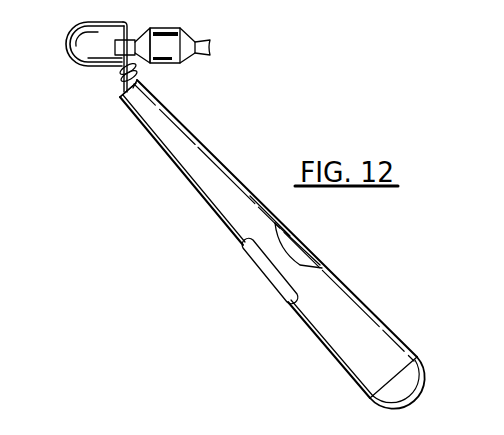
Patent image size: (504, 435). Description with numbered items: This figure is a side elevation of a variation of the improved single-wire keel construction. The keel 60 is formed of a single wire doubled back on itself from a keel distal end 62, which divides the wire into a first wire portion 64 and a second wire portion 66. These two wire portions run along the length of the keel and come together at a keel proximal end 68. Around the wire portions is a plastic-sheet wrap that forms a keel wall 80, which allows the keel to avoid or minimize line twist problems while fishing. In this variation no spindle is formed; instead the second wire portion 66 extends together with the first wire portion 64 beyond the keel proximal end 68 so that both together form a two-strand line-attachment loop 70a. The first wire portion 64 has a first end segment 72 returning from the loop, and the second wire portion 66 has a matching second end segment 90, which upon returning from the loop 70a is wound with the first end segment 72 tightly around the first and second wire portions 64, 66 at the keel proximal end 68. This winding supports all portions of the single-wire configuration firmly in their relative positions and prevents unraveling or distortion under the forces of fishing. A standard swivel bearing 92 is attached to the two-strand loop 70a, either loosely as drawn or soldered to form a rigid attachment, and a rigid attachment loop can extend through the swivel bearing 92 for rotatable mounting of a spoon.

The keel 60 is at (215, 152).
The keel distal end 62 is at (422, 375).
The first wire portion 64 is at (66, 50).
The second wire portion 66 is at (97, 31).
The keel proximal end 68 is at (122, 94).
The two-strand line-attachment loop 70a is at (82, 67).
The first end segment 72 is at (137, 67).
The keel wall 80 is at (250, 220).
The second end segment 90 is at (138, 75).
The swivel bearing 92 is at (178, 40).